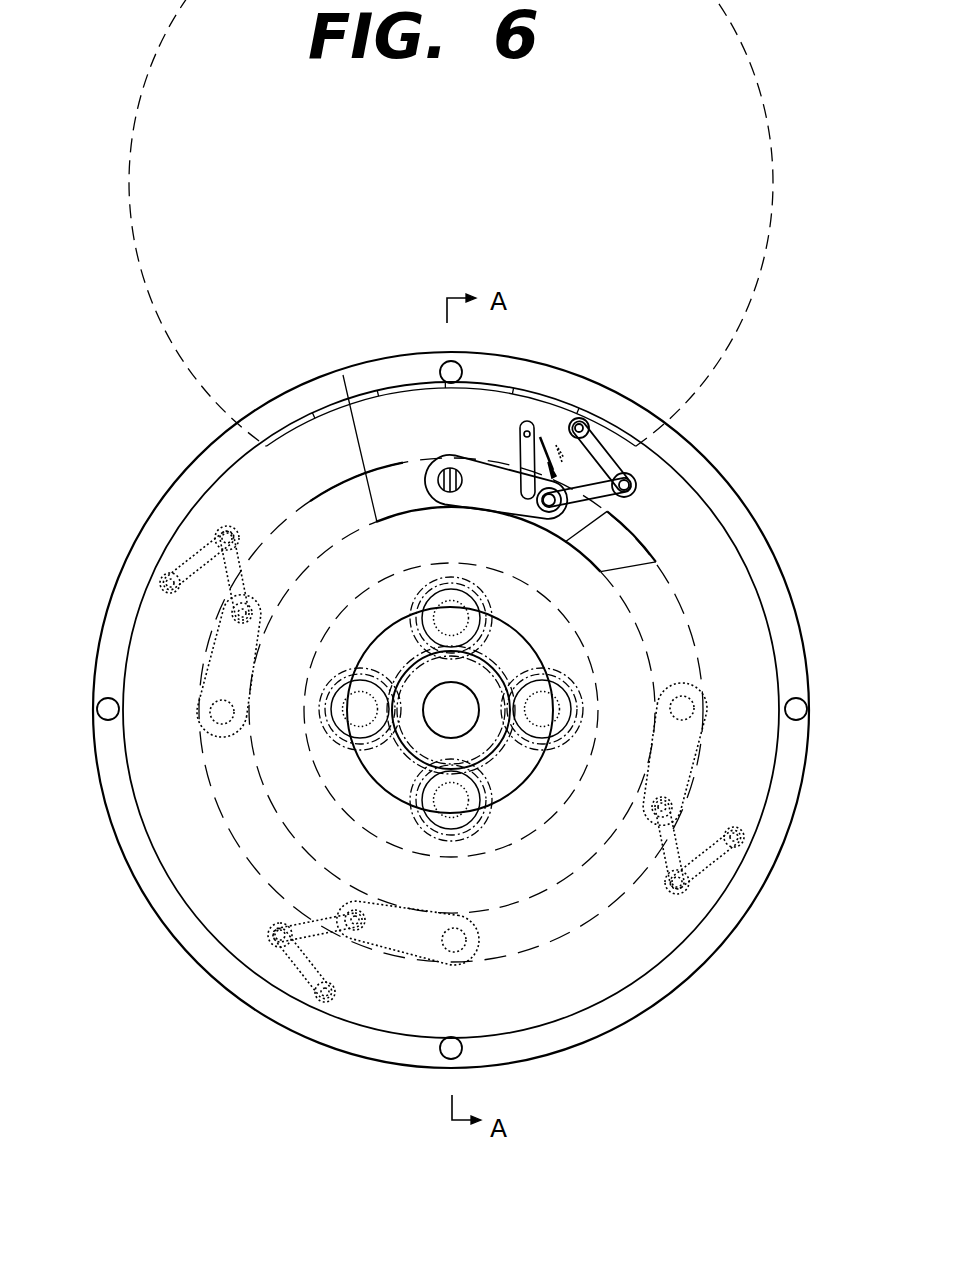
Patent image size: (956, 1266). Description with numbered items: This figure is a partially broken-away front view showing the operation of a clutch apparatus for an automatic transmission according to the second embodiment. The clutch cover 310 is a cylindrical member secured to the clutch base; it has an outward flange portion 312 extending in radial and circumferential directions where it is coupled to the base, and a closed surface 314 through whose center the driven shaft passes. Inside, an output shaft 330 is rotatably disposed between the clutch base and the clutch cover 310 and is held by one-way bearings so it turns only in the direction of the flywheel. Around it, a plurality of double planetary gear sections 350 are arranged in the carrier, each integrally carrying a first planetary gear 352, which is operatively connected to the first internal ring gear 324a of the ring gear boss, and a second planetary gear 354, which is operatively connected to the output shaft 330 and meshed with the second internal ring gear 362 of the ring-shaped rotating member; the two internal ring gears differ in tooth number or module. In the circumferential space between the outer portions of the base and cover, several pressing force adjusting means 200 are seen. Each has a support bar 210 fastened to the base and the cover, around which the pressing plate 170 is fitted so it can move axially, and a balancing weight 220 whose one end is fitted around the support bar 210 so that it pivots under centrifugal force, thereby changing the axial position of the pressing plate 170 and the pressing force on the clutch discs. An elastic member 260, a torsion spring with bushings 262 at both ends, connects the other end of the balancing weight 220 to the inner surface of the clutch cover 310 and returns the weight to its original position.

The pressing plate 170 is at (418, 507).
The pressing force adjusting means 200 is at (615, 424).
The support bar 210 is at (531, 418).
The balancing weight 220 is at (212, 647).
The elastic member 260 is at (205, 474).
The bushing 262 is at (168, 565).
The clutch cover 310 is at (738, 528).
The outward flange portion 312 is at (783, 610).
The closed surface 314 is at (705, 583).
The first internal ring gear 324a is at (330, 797).
The output shaft 330 is at (265, 875).
The double planetary gear section 350 is at (122, 330).
The first planetary gear 352 is at (392, 612).
The second planetary gear 354 is at (397, 620).
The second internal ring gear 362 is at (400, 762).